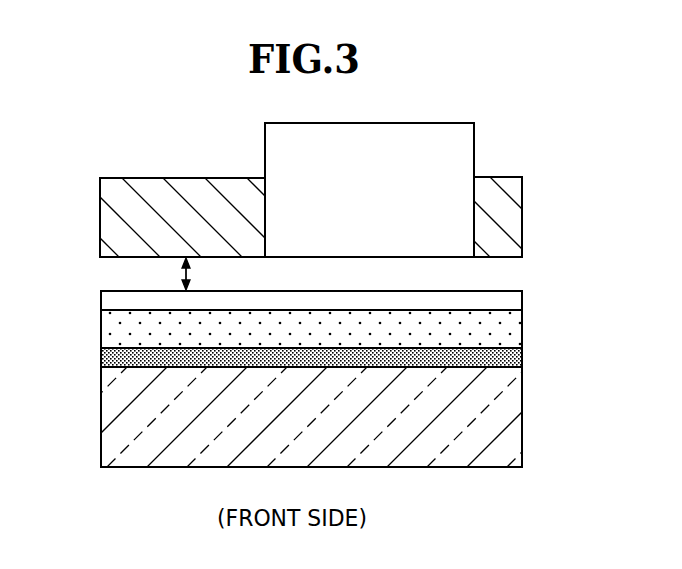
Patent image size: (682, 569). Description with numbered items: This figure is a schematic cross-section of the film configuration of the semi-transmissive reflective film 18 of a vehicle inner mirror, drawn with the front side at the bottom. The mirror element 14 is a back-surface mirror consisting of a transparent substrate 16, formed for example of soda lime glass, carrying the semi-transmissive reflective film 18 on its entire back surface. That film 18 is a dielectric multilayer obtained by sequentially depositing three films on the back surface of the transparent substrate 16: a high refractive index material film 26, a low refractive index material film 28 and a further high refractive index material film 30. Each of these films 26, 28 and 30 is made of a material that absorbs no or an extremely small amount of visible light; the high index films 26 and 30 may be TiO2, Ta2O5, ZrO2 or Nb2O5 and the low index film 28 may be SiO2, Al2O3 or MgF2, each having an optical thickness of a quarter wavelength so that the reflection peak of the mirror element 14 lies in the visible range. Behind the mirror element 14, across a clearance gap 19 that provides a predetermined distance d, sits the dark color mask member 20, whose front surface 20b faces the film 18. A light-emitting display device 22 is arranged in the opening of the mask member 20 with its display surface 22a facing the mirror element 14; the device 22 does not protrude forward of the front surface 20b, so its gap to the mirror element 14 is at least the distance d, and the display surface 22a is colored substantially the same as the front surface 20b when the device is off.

The mirror element 14 is at (340, 374).
The transparent substrate 16 is at (317, 417).
The semi-transmissive reflective film 18 is at (312, 330).
The clearance gap 19 is at (143, 271).
The dark color mask member 20 is at (515, 213).
The front surface of the dark color mask member 20b is at (122, 257).
The light-emitting display device 22 is at (474, 143).
The display surface 22a is at (448, 258).
The high refractive index material film 26 is at (517, 357).
The low refractive index material film 28 is at (517, 330).
The high refractive index material film 30 is at (515, 297).
The distance d is at (190, 272).